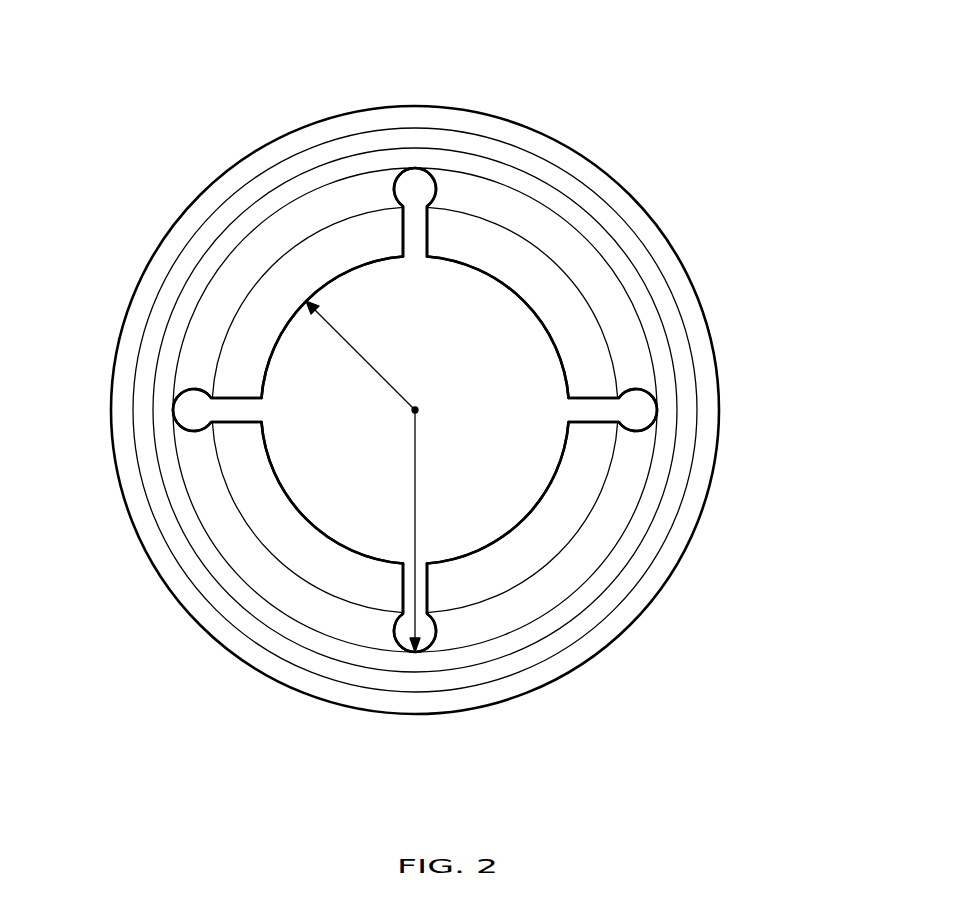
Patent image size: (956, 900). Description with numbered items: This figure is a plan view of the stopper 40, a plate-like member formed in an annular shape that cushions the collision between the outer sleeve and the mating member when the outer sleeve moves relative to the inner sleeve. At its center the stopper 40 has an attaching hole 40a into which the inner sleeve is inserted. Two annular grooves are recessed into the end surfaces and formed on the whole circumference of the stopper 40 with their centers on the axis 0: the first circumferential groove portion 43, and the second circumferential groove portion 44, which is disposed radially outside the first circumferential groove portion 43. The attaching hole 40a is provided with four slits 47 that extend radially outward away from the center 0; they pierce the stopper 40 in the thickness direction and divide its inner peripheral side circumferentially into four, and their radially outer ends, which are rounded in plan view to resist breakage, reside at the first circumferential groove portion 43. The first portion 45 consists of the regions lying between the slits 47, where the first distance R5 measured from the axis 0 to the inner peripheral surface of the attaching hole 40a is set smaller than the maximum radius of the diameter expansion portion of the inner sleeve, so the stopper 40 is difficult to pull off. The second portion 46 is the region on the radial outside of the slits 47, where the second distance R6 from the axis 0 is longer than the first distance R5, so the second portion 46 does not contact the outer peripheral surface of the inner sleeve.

The stopper 40 is at (653, 104).
The attaching hole 40a is at (340, 272).
The first circumferential groove portion 43 is at (585, 265).
The second circumferential groove portion 44 is at (653, 278).
The first portion 45 is at (285, 293).
The second portion 46 is at (417, 117).
The slit 47 is at (418, 236).
The first distance R5 is at (387, 380).
The second distance R6 is at (417, 458).
The axis 0 is at (413, 412).